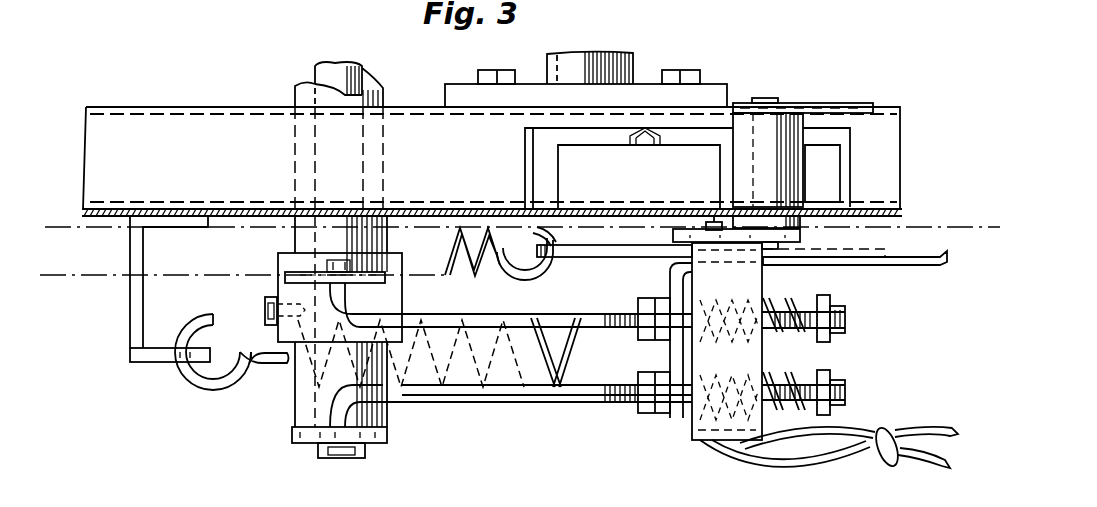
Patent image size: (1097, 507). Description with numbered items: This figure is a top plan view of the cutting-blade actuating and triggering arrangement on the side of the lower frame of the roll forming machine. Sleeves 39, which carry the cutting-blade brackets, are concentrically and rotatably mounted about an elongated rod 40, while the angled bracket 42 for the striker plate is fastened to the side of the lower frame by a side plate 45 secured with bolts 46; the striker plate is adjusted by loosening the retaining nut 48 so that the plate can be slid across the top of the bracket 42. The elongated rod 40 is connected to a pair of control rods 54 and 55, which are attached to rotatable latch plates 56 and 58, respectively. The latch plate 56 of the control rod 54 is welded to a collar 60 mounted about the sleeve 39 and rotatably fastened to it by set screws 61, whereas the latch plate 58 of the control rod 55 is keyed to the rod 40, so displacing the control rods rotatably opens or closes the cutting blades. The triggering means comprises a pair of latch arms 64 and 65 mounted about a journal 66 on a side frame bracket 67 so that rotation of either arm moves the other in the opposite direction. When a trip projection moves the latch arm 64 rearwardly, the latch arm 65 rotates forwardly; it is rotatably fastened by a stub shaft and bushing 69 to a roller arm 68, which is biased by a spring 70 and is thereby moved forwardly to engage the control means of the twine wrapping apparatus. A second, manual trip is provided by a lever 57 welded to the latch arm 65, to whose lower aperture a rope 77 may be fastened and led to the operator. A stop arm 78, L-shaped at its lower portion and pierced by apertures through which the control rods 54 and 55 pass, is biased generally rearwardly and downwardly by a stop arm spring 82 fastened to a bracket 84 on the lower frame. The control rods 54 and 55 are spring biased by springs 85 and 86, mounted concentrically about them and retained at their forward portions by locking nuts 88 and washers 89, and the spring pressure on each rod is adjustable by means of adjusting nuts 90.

The sleeve 39 is at (295, 100).
The elongated rod 40 is at (347, 63).
The bracket 42 is at (583, 52).
The side plate 45 is at (716, 84).
The bolt 46 is at (497, 70).
The retaining nut 48 is at (318, 1).
The control rod 54 is at (522, 314).
The control rod 55 is at (455, 404).
The latch plate 56 is at (290, 278).
The manual trip lever 57 is at (765, 438).
The latch plate 58 is at (292, 435).
The collar 60 is at (278, 262).
The set screw 61 is at (265, 312).
The latch arm 64 is at (833, 103).
The latch arm 65 is at (800, 236).
The journal 66 is at (767, 98).
The side frame bracket 67 is at (580, 162).
The roller arm 68 is at (642, 248).
The stub shaft and bushing 69 is at (712, 222).
The spring 70 is at (492, 232).
The rope 77 is at (940, 433).
The stop arm 78 is at (897, 257).
The stop arm spring 82 is at (215, 396).
The bracket 84 is at (130, 330).
The spring 85 is at (790, 298).
The spring 86 is at (770, 372).
The locking nut 88 is at (832, 296).
The washer 89 is at (800, 362).
The adjusting nut 90 is at (645, 298).